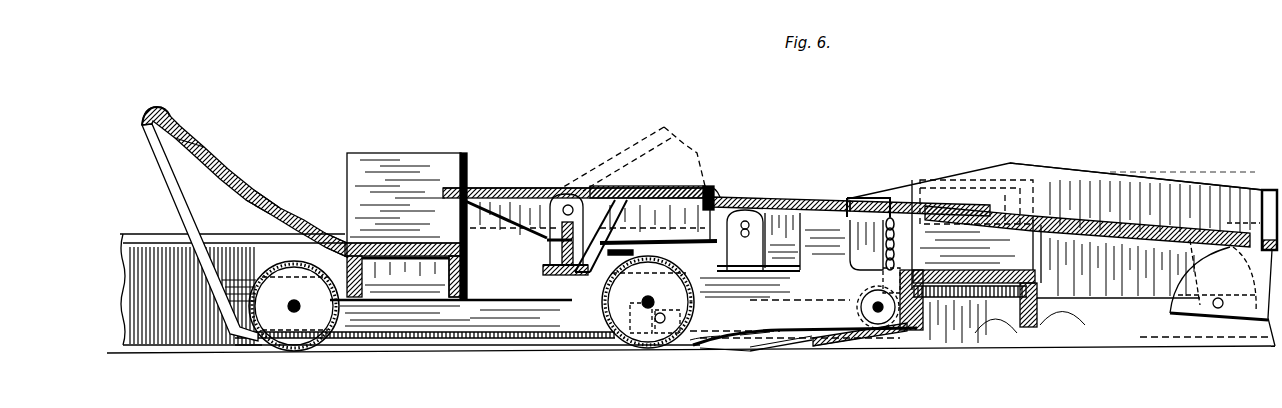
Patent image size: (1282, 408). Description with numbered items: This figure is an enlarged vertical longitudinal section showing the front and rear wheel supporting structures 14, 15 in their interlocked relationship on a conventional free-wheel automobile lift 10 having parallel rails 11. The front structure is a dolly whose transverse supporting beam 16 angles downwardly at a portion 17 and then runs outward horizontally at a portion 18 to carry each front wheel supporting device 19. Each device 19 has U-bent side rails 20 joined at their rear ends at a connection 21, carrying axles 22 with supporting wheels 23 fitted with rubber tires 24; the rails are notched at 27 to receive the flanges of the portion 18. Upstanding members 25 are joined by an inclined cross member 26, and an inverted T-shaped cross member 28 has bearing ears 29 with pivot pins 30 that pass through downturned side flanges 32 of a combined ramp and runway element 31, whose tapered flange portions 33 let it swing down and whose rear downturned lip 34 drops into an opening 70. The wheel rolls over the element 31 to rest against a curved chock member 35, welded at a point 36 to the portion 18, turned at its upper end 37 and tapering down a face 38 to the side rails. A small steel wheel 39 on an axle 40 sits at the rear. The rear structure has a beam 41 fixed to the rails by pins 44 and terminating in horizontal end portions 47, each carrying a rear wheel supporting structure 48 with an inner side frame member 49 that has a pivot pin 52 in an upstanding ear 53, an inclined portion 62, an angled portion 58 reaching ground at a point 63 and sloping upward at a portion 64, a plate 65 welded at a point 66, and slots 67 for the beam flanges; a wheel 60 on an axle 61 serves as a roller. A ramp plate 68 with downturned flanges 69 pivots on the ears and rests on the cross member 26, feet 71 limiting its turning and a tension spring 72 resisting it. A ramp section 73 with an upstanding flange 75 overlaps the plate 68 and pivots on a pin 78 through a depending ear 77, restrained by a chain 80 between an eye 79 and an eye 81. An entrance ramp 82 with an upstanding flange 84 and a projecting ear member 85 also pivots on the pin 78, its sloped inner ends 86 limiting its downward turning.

The free-wheel automobile lift 10 is at (128, 356).
The rails 11 is at (171, 345).
The front wheel supporting structure 14 is at (263, 187).
The rear wheel supporting structure 15 is at (1043, 154).
The transverse supporting beam 16 is at (395, 152).
The downwardly angled beam portion 17 is at (446, 176).
The horizontal end portion of beam 18 is at (430, 262).
The front wheel supporting device 19 is at (294, 222).
The supporting side rails 20 is at (497, 310).
The rear connection of side rails 21 is at (897, 332).
The axles 22 is at (293, 313).
The supporting wheels 23 is at (317, 345).
The rubber tire 24 is at (268, 343).
The upstanding members 25 is at (822, 262).
The cross member 26 is at (822, 207).
The notches 27 is at (465, 293).
The T-shaped cross member 28 is at (553, 254).
The bearing ears 29 is at (610, 188).
The pivot pins 30 is at (561, 198).
The combined ramp and runway element 31 is at (513, 187).
The downturned side flanges 32 is at (487, 187).
The tapered flange portions 33 is at (508, 233).
The downturned lip 34 is at (694, 137).
The chock member 35 is at (224, 170).
The weld point 36 is at (350, 227).
The turned upper end of chock 37 is at (153, 108).
The tapering face of chock 38 is at (158, 173).
The small wheel 39 is at (861, 309).
The axle 40 is at (870, 337).
The transverse supporting beam 41 is at (994, 173).
The pins 44 is at (1083, 226).
The horizontal end portions 47 is at (1000, 270).
The rear wheel supporting structure 48 is at (1107, 173).
The inner side frame member 49 is at (1093, 310).
The pivot pin 52 is at (757, 202).
The upstanding ears 53 is at (727, 258).
The angled rail portion 58 is at (780, 344).
The wheel 60 is at (697, 336).
The axle 61 is at (664, 338).
The inclined rail portion 62 is at (724, 338).
The ground contact point 63 is at (756, 341).
The upward sloping rail portion 64 is at (807, 343).
The plate 65 is at (830, 341).
The weld point 66 is at (920, 333).
The slots 67 is at (1022, 323).
The ramp plate 68 is at (783, 210).
The downturned flanges 69 is at (742, 210).
The opening 70 is at (733, 190).
The feet 71 is at (573, 274).
The tension spring 72 is at (592, 270).
The ramp section 73 is at (1140, 212).
The upstanding flange 75 is at (1067, 185).
The depending ear 77 is at (1186, 272).
The pivot pin 78 is at (1216, 309).
The eye 79 is at (888, 205).
The chain 80 is at (874, 272).
The eye 81 is at (876, 358).
The entrance ramp 82 is at (1250, 279).
The upstanding flange 84 is at (1266, 190).
The projecting ear member 85 is at (1190, 265).
The sloped inner ends 86 is at (1153, 293).